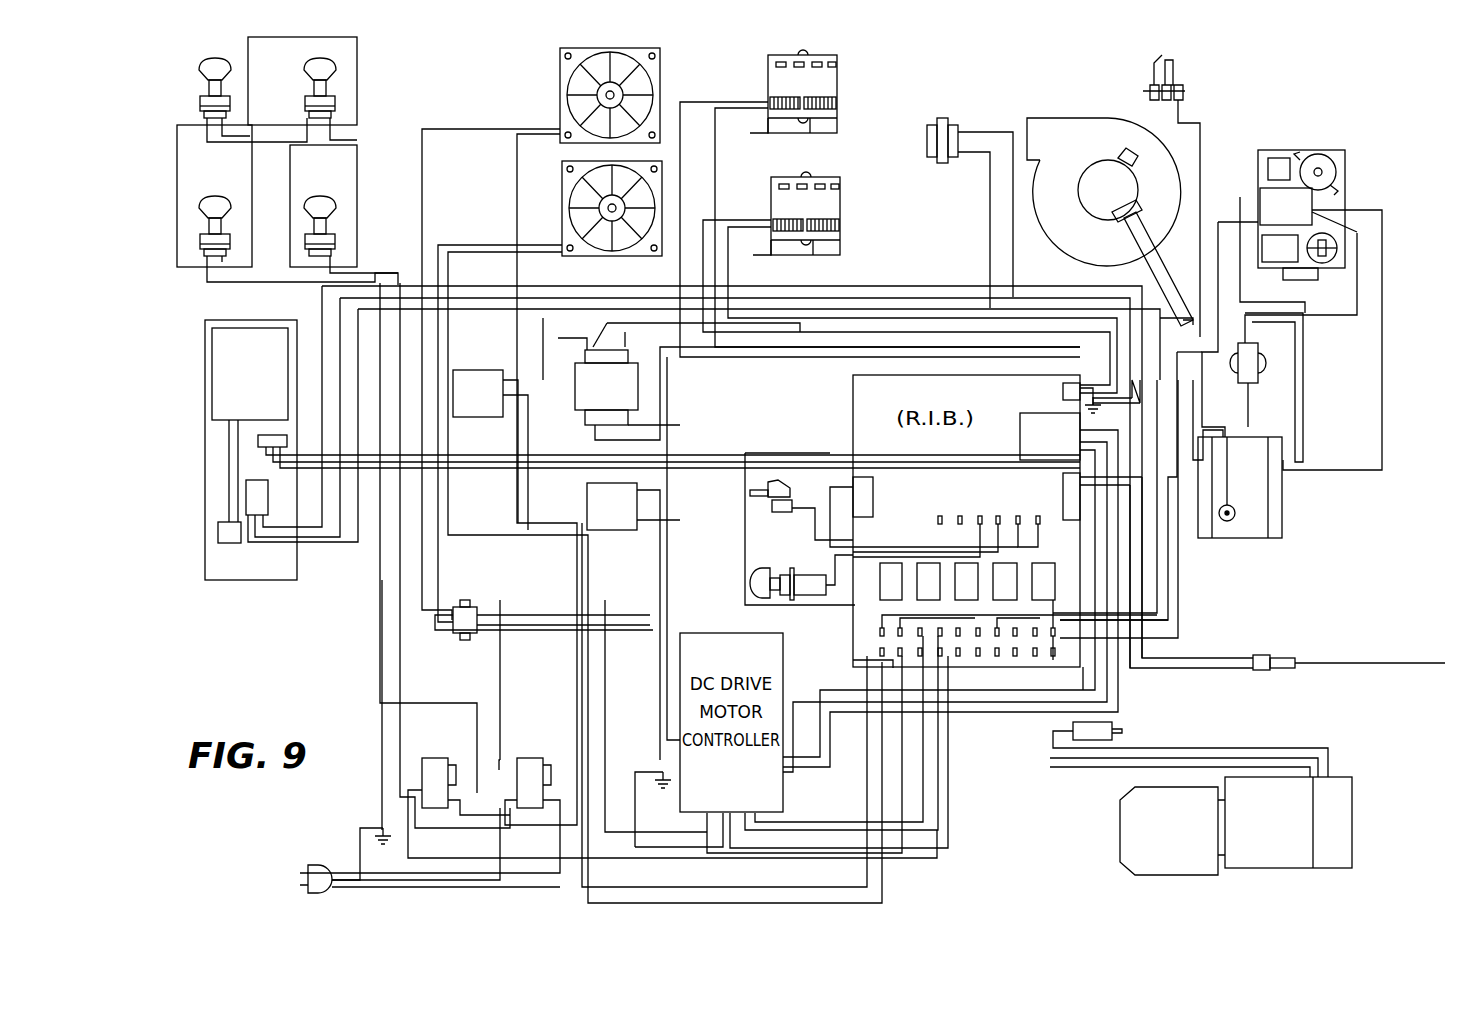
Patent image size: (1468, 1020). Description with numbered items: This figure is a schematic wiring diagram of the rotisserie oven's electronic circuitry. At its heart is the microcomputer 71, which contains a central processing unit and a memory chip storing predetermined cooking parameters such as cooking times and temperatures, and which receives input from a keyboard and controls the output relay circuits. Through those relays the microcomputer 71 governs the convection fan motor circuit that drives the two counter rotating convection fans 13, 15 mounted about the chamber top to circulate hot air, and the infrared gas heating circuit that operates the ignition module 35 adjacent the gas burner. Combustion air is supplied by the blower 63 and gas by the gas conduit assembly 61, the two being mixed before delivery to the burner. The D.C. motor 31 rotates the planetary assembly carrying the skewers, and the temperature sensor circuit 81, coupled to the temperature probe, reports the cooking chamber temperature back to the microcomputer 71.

The convection fan 13 is at (837, 78).
The convection fan 15 is at (840, 208).
The blower 63 is at (1070, 117).
The gas conduit assembly 61 is at (1348, 165).
The ignition module 35 is at (1282, 515).
The microcomputer 71 is at (200, 375).
The temperature sensor circuit 81 is at (1275, 655).
The D.C. motor 31 is at (1352, 822).